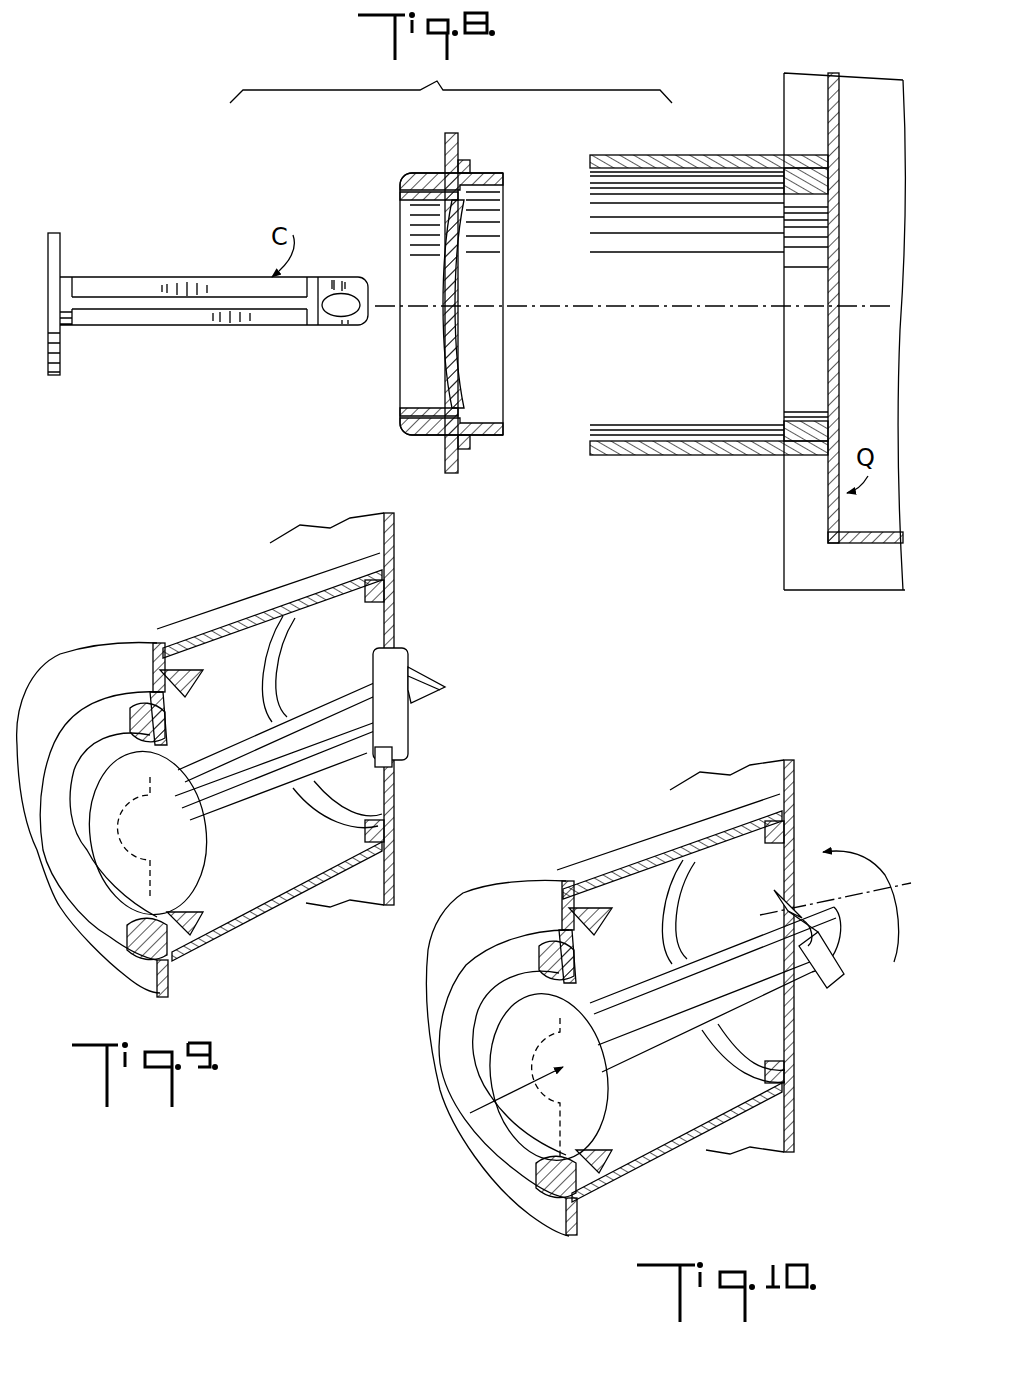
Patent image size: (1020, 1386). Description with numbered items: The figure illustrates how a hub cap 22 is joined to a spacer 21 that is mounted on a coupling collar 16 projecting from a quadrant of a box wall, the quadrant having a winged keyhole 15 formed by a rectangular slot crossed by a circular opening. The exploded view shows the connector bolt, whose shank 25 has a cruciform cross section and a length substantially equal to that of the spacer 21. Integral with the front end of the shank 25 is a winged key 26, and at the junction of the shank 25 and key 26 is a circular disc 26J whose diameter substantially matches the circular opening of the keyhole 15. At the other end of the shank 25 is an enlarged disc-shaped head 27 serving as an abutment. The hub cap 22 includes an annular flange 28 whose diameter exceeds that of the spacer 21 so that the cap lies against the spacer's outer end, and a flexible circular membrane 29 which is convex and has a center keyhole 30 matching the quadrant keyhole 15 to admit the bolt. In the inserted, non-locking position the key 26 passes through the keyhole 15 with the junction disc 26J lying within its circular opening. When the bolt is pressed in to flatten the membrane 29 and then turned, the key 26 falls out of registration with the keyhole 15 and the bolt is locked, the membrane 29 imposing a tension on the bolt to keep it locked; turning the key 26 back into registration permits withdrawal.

In FIG. 8, the keyhole 15 is at (840, 284).
In FIG. 9, the keyhole 15 is at (395, 624).
In FIG. 10, the keyhole 15 is at (732, 957).
In FIG. 8, the coupling collar 16 is at (800, 189).
In FIG. 9, the coupling collar 16 is at (357, 817).
In FIG. 10, the coupling collar 16 is at (678, 925).
In FIG. 8, the spacer 21 is at (718, 154).
In FIG. 9, the spacer 21 is at (245, 930).
In FIG. 10, the spacer 21 is at (670, 998).
In FIG. 8, the hub cap 22 is at (482, 171).
In FIG. 8, the shank 25 is at (200, 278).
In FIG. 9, the shank 25 is at (249, 813).
In FIG. 10, the shank 25 is at (653, 1060).
In FIG. 8, the key 26 is at (345, 323).
In FIG. 9, the key 26 is at (446, 687).
In FIG. 10, the key 26 is at (823, 988).
In FIG. 8, the circular disc 26J is at (312, 280).
In FIG. 9, the circular disc 26J is at (411, 723).
In FIG. 10, the circular disc 26J is at (802, 921).
In FIG. 8, the enlarged head 27 is at (63, 365).
In FIG. 9, the enlarged head 27 is at (123, 890).
In FIG. 10, the enlarged head 27 is at (545, 1077).
In FIG. 8, the annular flange 28 is at (460, 463).
In FIG. 9, the annular flange 28 is at (110, 640).
In FIG. 8, the circular membrane 29 is at (452, 376).
In FIG. 9, the circular membrane 29 is at (165, 815).
In FIG. 10, the circular membrane 29 is at (566, 990).
In FIG. 8, the keyhole 30 is at (448, 292).